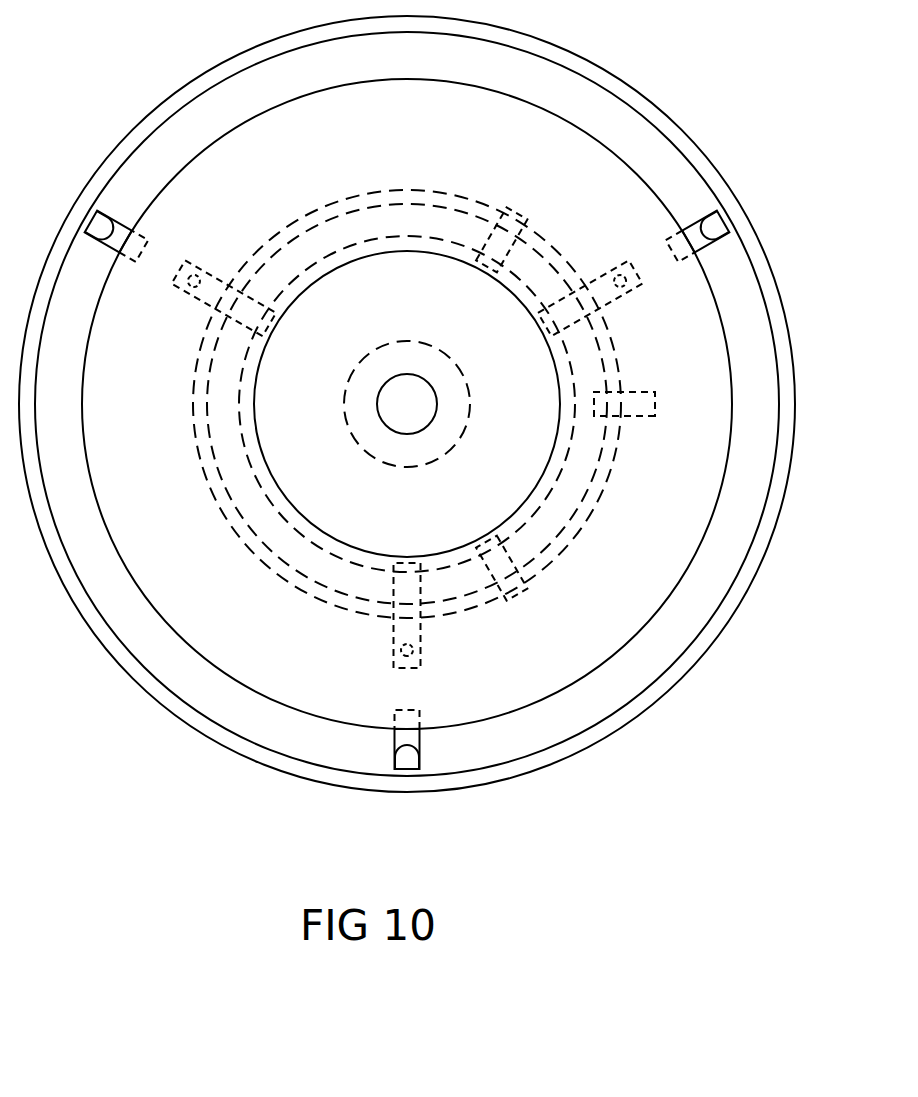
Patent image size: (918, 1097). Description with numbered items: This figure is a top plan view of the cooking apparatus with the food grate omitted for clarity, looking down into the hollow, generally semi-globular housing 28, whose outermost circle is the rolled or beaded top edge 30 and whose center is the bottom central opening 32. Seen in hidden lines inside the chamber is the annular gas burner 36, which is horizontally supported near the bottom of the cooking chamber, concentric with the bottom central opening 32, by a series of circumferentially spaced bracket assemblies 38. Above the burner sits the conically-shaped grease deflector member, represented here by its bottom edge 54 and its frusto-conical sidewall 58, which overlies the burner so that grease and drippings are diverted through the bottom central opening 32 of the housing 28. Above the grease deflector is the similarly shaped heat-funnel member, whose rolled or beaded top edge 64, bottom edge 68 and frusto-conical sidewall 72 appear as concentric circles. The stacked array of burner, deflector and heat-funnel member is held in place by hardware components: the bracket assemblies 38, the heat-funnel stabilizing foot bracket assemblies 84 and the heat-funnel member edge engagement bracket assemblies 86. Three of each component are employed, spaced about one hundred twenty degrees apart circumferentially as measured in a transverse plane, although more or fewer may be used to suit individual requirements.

The housing 28 is at (190, 733).
The top edge 30 is at (624, 716).
The bottom central opening 32 is at (478, 370).
The gas burner 36 is at (577, 518).
The bracket assembly 38 is at (198, 268).
The bottom edge 54 is at (420, 427).
The frusto-conical sidewall 58 is at (320, 426).
The top edge 64 is at (687, 575).
The bottom edge 68 is at (336, 542).
The frusto-conical sidewall 72 is at (225, 609).
The heat-funnel stabilizing foot bracket assembly 84 is at (227, 413).
The heat-funnel member edge engagement bracket assembly 86 is at (108, 238).